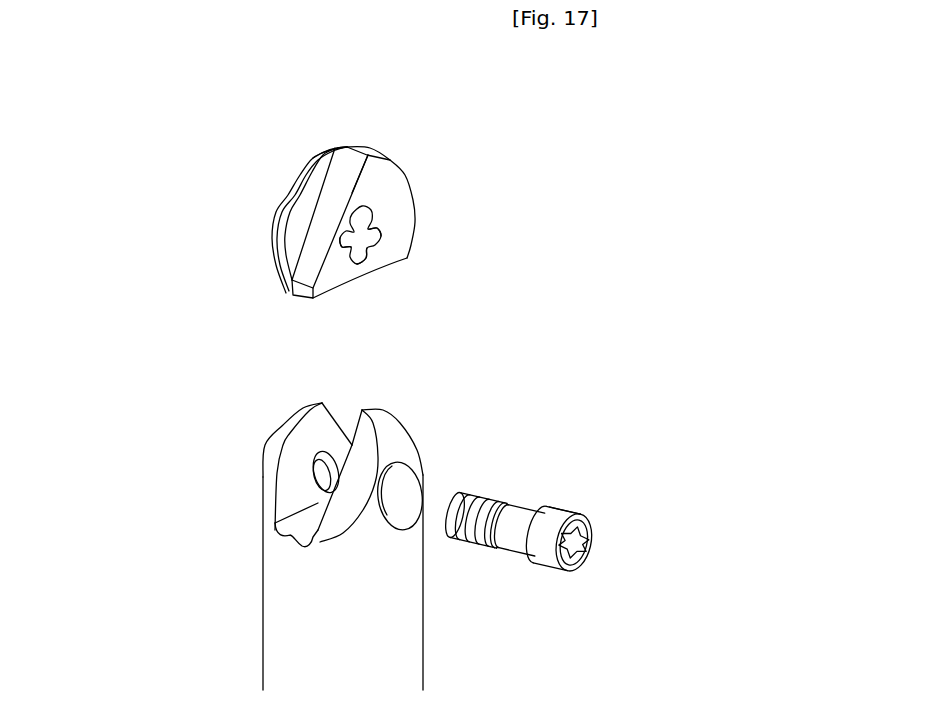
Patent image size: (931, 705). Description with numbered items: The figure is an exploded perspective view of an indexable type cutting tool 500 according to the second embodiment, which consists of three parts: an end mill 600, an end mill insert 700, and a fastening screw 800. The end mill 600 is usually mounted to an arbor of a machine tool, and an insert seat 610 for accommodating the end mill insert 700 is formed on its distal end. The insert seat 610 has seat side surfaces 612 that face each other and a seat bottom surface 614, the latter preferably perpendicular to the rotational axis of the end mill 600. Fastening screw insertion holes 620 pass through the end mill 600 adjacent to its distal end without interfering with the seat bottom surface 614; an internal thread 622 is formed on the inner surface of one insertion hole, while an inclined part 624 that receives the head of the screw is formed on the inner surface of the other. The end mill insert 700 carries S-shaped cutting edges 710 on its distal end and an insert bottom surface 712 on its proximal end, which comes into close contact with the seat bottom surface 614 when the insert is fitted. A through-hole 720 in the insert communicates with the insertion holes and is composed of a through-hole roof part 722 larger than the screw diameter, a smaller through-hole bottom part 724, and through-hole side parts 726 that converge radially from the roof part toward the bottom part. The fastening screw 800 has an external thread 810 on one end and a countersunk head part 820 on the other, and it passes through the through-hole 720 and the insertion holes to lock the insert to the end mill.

The indexable type cutting tool 500 is at (177, 260).
The end mill 600 is at (412, 632).
The insert seat 610 is at (292, 451).
The seat side surfaces 612 is at (300, 432).
The seat bottom surface 614 is at (275, 535).
The fastening screw insertion holes 620 is at (338, 430).
The internal thread 622 is at (310, 474).
The inclined part 624 is at (410, 490).
The end mill insert 700 is at (413, 187).
The S-shaped cutting edges 710 is at (332, 148).
The insert bottom surface 712 is at (395, 263).
The through-hole 720 is at (375, 202).
The through-hole roof part 722 is at (350, 228).
The through-hole bottom part 724 is at (375, 247).
The through-hole side parts 726 is at (380, 218).
The fastening screw 800 is at (530, 513).
The external thread 810 is at (472, 543).
The head part 820 is at (587, 515).